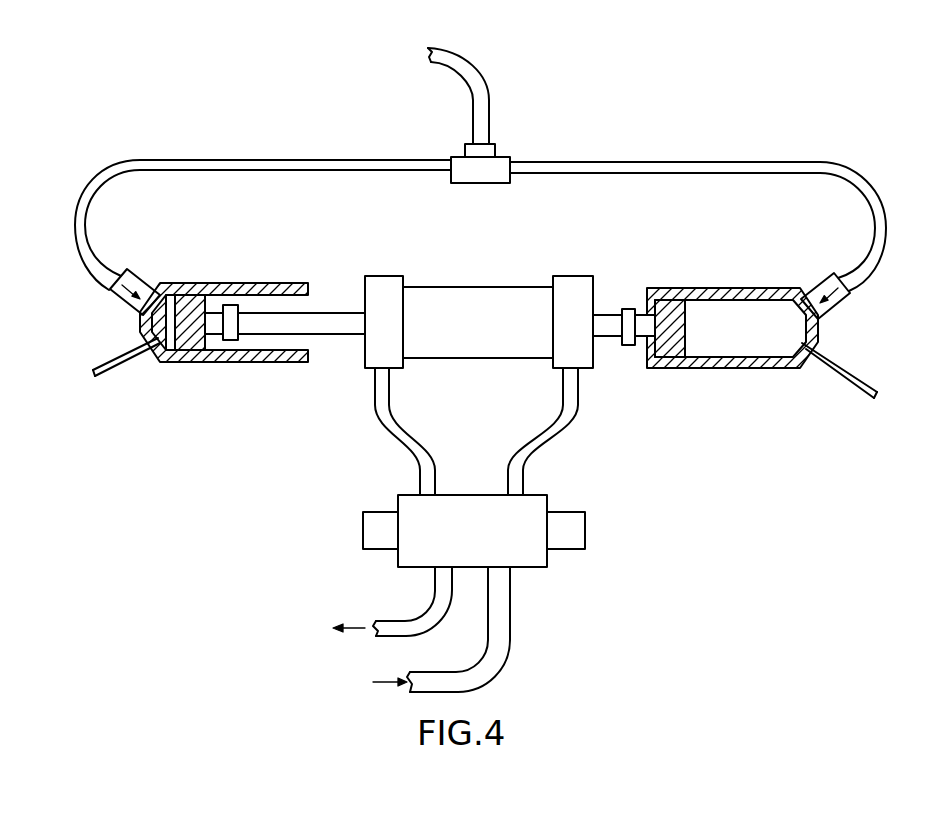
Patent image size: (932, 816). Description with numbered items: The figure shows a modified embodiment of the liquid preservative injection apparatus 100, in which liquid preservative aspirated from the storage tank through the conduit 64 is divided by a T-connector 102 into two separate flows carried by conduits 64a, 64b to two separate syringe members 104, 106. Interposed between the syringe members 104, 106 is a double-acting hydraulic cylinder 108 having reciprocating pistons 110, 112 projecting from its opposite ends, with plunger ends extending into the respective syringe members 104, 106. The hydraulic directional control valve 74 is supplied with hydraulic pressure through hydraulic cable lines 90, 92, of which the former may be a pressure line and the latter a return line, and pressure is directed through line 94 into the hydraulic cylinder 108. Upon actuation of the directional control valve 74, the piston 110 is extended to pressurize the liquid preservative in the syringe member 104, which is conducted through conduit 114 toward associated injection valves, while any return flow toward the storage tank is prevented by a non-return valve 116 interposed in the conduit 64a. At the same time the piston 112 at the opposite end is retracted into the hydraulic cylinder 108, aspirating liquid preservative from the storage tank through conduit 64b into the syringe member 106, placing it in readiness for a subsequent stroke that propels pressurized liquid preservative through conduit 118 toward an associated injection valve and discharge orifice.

The conduit 64 is at (482, 73).
The conduit 64a is at (251, 160).
The conduit 64b is at (773, 163).
The liquid preservative injection apparatus 100 is at (602, 140).
The T-connector 102 is at (488, 184).
The syringe member 104 is at (247, 363).
The syringe member 106 is at (712, 290).
The double-acting hydraulic cylinder 108 is at (513, 287).
The piston 110 is at (342, 334).
The piston 112 is at (608, 337).
The conduit 114 is at (115, 368).
The non-return valve 116 is at (142, 279).
The conduit 118 is at (848, 373).
The line 94 is at (572, 431).
The hydraulic directional control valve 74 is at (535, 495).
The hydraulic cable line 92 is at (427, 605).
The hydraulic cable line 90 is at (511, 642).